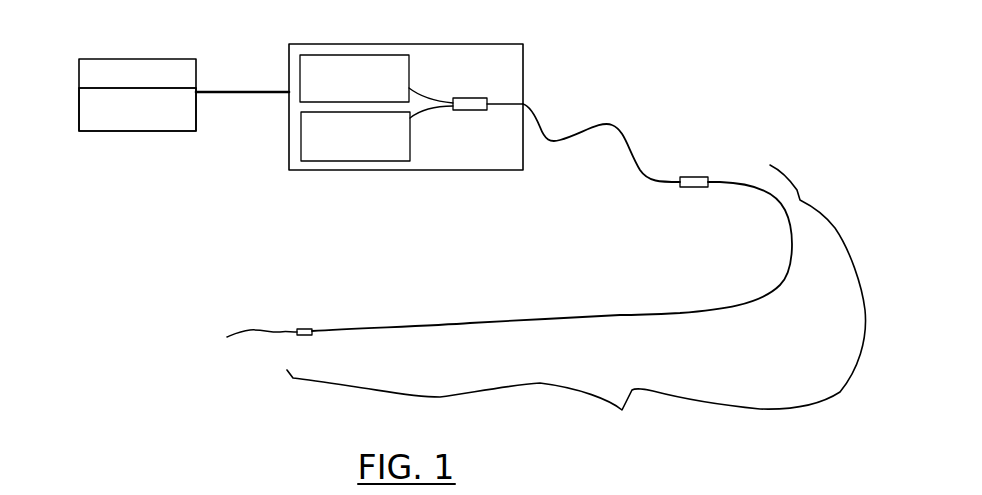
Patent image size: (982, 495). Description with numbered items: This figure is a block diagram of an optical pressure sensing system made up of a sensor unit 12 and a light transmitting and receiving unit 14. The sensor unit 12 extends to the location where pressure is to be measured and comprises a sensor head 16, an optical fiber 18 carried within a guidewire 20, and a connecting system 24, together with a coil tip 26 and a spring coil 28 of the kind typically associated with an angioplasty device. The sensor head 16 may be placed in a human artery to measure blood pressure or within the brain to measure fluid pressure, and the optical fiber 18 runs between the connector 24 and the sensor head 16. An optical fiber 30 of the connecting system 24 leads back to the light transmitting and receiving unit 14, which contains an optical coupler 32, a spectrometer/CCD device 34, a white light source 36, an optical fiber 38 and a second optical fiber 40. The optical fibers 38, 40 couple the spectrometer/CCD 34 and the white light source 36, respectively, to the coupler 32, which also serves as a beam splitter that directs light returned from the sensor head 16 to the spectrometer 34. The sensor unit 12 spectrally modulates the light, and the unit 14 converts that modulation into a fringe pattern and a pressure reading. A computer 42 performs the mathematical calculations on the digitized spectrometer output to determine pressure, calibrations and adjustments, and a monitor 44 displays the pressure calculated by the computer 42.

The sensor unit 12 is at (576, 302).
The light transmitting and receiving unit 14 is at (390, 44).
The sensor head 16 is at (300, 323).
The optical fiber 18 is at (640, 310).
The guidewire 20 is at (685, 308).
The connecting system 24 is at (700, 188).
The coil tip 26 is at (241, 342).
The spring coil 28 is at (333, 328).
The optical fiber 30 is at (613, 125).
The optical coupler 32 is at (473, 97).
The spectrometer/CCD device 34 is at (409, 66).
The white light source 36 is at (410, 150).
The optical fiber 38 is at (411, 98).
The second optical fiber 40 is at (430, 108).
The computer 42 is at (95, 58).
The monitor 44 is at (80, 118).